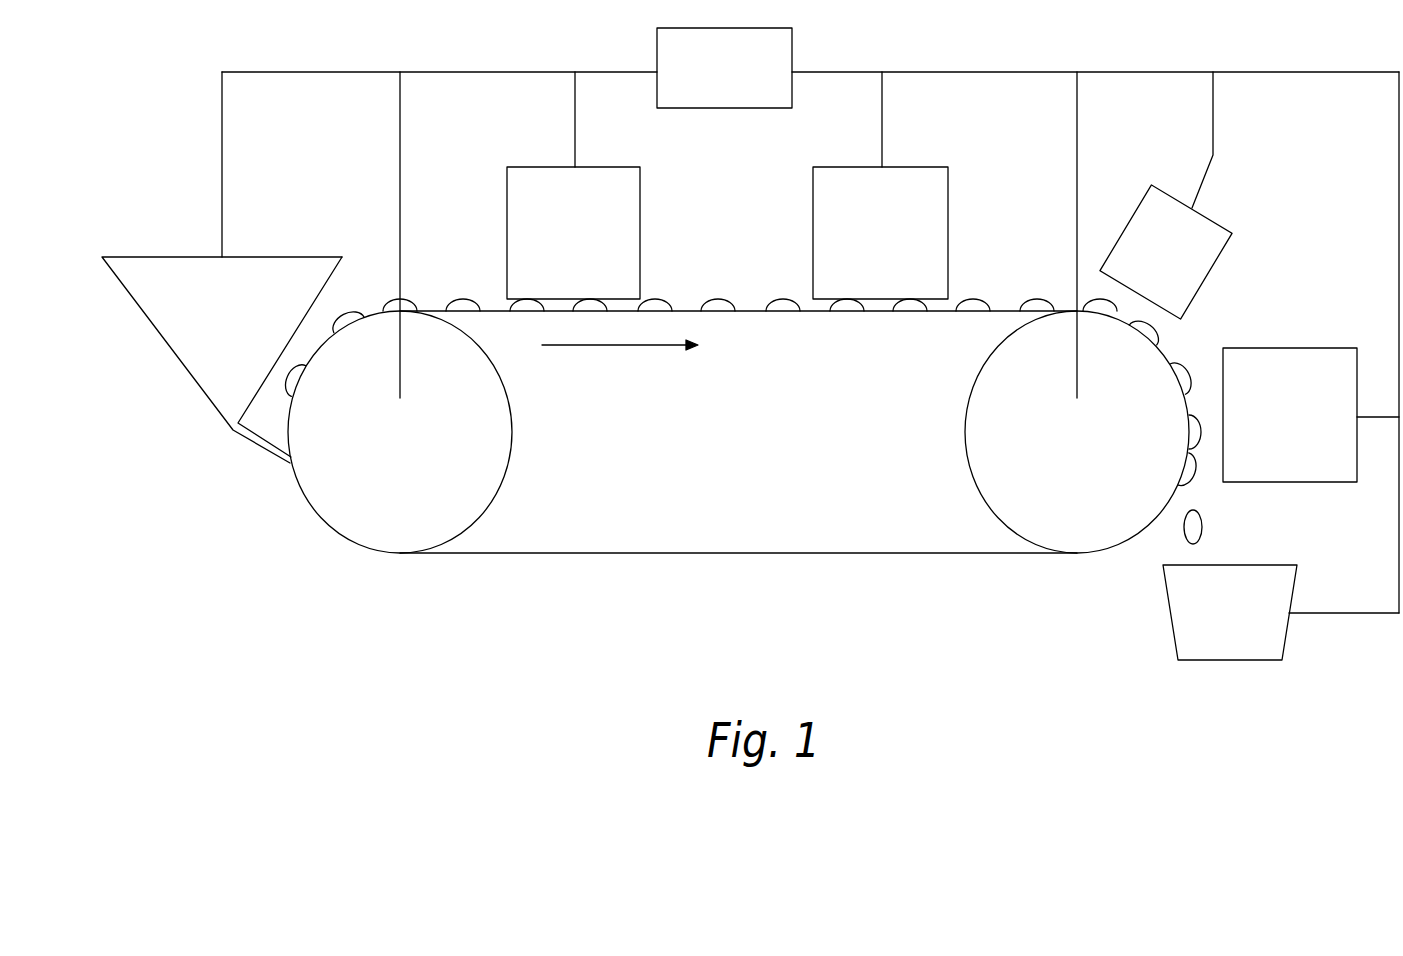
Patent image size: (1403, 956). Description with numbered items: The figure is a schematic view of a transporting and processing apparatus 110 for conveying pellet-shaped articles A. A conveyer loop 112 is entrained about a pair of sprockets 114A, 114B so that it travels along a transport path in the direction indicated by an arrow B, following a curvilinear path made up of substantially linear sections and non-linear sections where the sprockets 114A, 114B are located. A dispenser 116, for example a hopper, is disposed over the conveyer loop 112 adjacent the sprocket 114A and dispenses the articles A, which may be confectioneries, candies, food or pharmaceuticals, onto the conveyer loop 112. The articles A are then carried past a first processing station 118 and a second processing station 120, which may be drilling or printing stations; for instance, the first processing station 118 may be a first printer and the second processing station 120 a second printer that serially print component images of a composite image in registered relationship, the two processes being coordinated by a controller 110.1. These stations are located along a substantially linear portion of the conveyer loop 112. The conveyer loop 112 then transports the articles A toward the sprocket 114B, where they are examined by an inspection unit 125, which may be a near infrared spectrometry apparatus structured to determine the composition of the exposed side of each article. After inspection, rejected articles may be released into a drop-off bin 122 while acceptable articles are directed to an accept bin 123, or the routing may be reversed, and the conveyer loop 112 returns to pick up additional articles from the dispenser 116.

The transporting and processing apparatus 110 is at (750, 357).
The controller 110.1 is at (698, 82).
The conveyer loop 112 is at (742, 555).
The sprocket 114A is at (375, 443).
The sprocket 114B is at (1055, 442).
The dispenser 116 is at (242, 335).
The first processing station 118 is at (557, 247).
The second processing station 120 is at (862, 247).
The drop-off bin 122 is at (1210, 625).
The accept bin 123 is at (1272, 432).
The inspection unit 125 is at (1145, 262).
The articles A is at (343, 318).
The arrow B is at (605, 347).